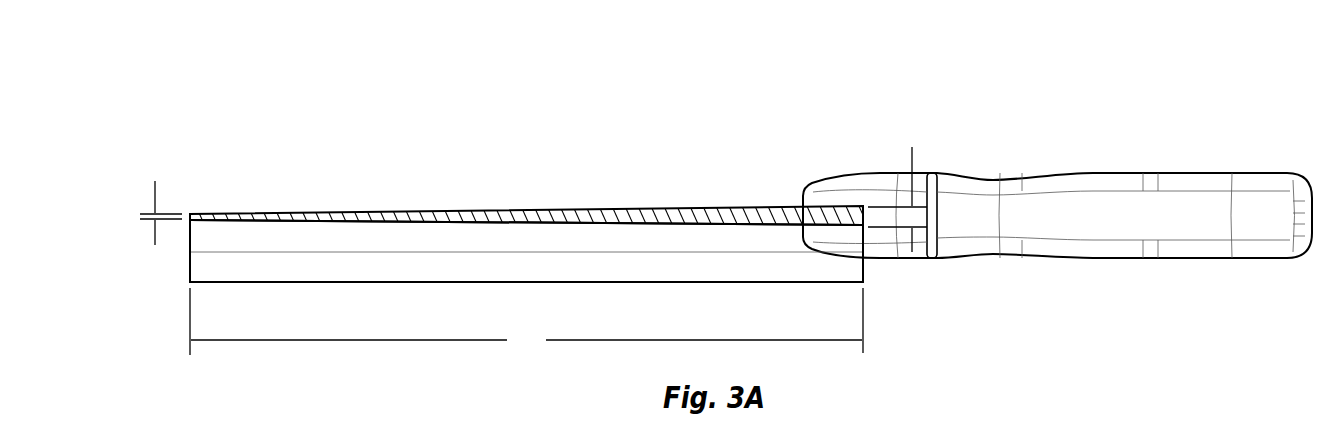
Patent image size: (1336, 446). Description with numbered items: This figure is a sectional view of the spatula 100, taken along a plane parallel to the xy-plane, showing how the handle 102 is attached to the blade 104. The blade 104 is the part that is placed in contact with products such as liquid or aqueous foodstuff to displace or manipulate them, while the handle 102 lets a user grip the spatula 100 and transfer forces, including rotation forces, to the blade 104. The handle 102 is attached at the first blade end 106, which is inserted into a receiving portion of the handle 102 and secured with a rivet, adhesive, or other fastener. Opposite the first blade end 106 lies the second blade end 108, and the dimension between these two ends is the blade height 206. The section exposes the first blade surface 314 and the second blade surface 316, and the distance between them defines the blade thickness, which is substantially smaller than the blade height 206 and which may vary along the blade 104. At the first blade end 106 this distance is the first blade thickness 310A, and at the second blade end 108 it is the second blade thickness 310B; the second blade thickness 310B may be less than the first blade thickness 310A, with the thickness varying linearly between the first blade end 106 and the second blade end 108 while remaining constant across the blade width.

The spatula 100 is at (176, 96).
The handle 102 is at (1122, 173).
The blade 104 is at (202, 266).
The first blade end 106 is at (868, 263).
The second blade end 108 is at (190, 242).
The blade height 206 is at (526, 321).
The first blade thickness 310A is at (912, 147).
The second blade thickness 310B is at (155, 181).
The first blade surface 314 is at (501, 206).
The second blade surface 316 is at (502, 228).